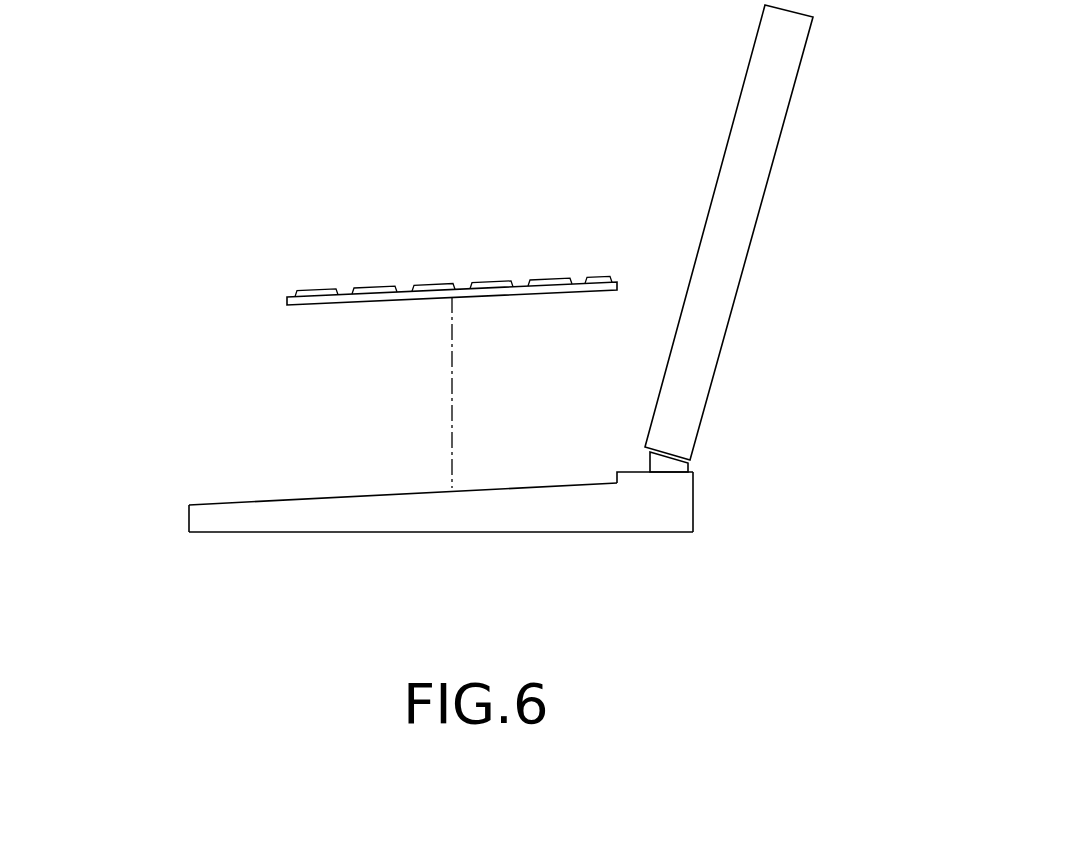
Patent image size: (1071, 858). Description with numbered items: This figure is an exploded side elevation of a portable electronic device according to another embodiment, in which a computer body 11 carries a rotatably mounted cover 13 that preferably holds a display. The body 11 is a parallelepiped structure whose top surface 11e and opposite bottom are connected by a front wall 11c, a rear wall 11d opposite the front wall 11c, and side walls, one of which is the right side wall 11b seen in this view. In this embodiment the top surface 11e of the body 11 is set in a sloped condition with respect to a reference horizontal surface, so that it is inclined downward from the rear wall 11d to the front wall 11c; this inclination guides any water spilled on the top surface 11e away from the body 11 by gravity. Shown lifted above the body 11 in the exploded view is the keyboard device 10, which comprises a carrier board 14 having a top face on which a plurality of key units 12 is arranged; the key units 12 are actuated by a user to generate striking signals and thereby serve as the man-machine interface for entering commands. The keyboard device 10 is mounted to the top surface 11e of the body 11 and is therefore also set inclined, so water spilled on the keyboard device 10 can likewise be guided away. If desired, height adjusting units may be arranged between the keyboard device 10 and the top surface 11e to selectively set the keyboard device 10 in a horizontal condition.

The keyboard device 10 is at (301, 248).
The body 11 is at (205, 513).
The right side wall 11b is at (645, 510).
The front wall 11c is at (187, 520).
The rear wall 11d is at (695, 505).
The top surface 11e is at (273, 500).
The key units 12 is at (375, 290).
The cover 13 is at (752, 120).
The carrier board 14 is at (287, 302).